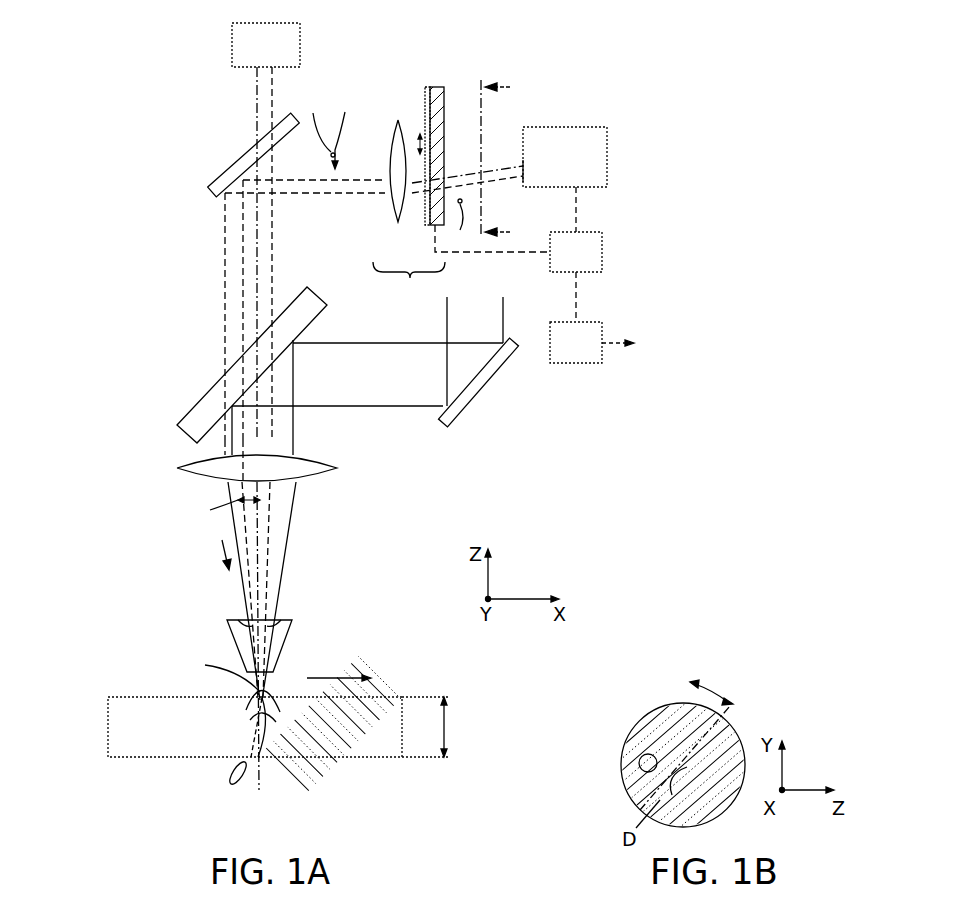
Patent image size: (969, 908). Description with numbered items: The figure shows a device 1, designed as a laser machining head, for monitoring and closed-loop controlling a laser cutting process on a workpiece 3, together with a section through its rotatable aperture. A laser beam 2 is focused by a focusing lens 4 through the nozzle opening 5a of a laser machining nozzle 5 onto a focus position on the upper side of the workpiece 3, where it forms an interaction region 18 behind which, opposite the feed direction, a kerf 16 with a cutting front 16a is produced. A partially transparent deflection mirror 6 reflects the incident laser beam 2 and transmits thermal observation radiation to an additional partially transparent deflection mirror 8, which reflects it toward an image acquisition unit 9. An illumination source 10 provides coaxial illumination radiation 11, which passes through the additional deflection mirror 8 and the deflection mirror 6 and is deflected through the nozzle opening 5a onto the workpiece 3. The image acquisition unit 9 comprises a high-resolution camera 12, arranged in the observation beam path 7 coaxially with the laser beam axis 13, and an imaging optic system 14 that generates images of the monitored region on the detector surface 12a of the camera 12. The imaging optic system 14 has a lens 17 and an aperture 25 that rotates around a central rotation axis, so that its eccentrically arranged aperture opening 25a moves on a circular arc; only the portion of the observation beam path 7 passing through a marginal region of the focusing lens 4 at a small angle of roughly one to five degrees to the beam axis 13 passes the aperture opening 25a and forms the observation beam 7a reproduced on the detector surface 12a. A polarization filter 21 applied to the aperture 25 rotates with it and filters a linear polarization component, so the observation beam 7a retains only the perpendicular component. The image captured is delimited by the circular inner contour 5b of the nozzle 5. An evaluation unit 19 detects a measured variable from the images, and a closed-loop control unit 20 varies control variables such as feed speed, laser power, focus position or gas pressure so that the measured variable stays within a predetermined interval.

In FIG. 1A, the device 1 is at (151, 303).
In FIG. 1A, the laser beam 2 is at (356, 355).
In FIG. 1A, the workpiece 3 is at (345, 745).
In FIG. 1A, the focusing lens 4 is at (200, 472).
In FIG. 1A, the laser machining nozzle 5 is at (242, 627).
In FIG. 1A, the nozzle opening 5a is at (275, 625).
In FIG. 1A, the inner contour 5b is at (248, 625).
In FIG. 1A, the deflection mirror 6 is at (214, 393).
In FIG. 1A, the observation beam path 7 is at (352, 216).
In FIG. 1A, the observation beam 7a is at (465, 172).
In FIG. 1A, the additional partially transparent deflection mirror 8 is at (230, 170).
In FIG. 1A, the image acquisition unit 9 is at (540, 109).
In FIG. 1A, the illumination source 10 is at (250, 48).
In FIG. 1A, the illumination radiation 11 is at (256, 100).
In FIG. 1A, the camera 12 is at (590, 135).
In FIG. 1A, the detector surface 12a is at (522, 178).
In FIG. 1A, the laser beam axis 13 is at (262, 515).
In FIG. 1A, the imaging optic system 14 is at (409, 285).
In FIG. 1A, the kerf 16 is at (168, 715).
In FIG. 1A, the cutting front 16a is at (252, 748).
In FIG. 1A, the lens 17 is at (395, 136).
In FIG. 1A, the interaction region 18 is at (250, 697).
In FIG. 1A, the evaluation unit 19 is at (585, 260).
In FIG. 1A, the closed-loop control unit 20 is at (585, 350).
In FIG. 1A, the polarization filter 21 is at (427, 98).
In FIG. 1A, the aperture 25 is at (438, 93).
In FIG. 1B, the aperture 25 is at (685, 720).
In FIG. 1B, the aperture opening 25a is at (646, 760).